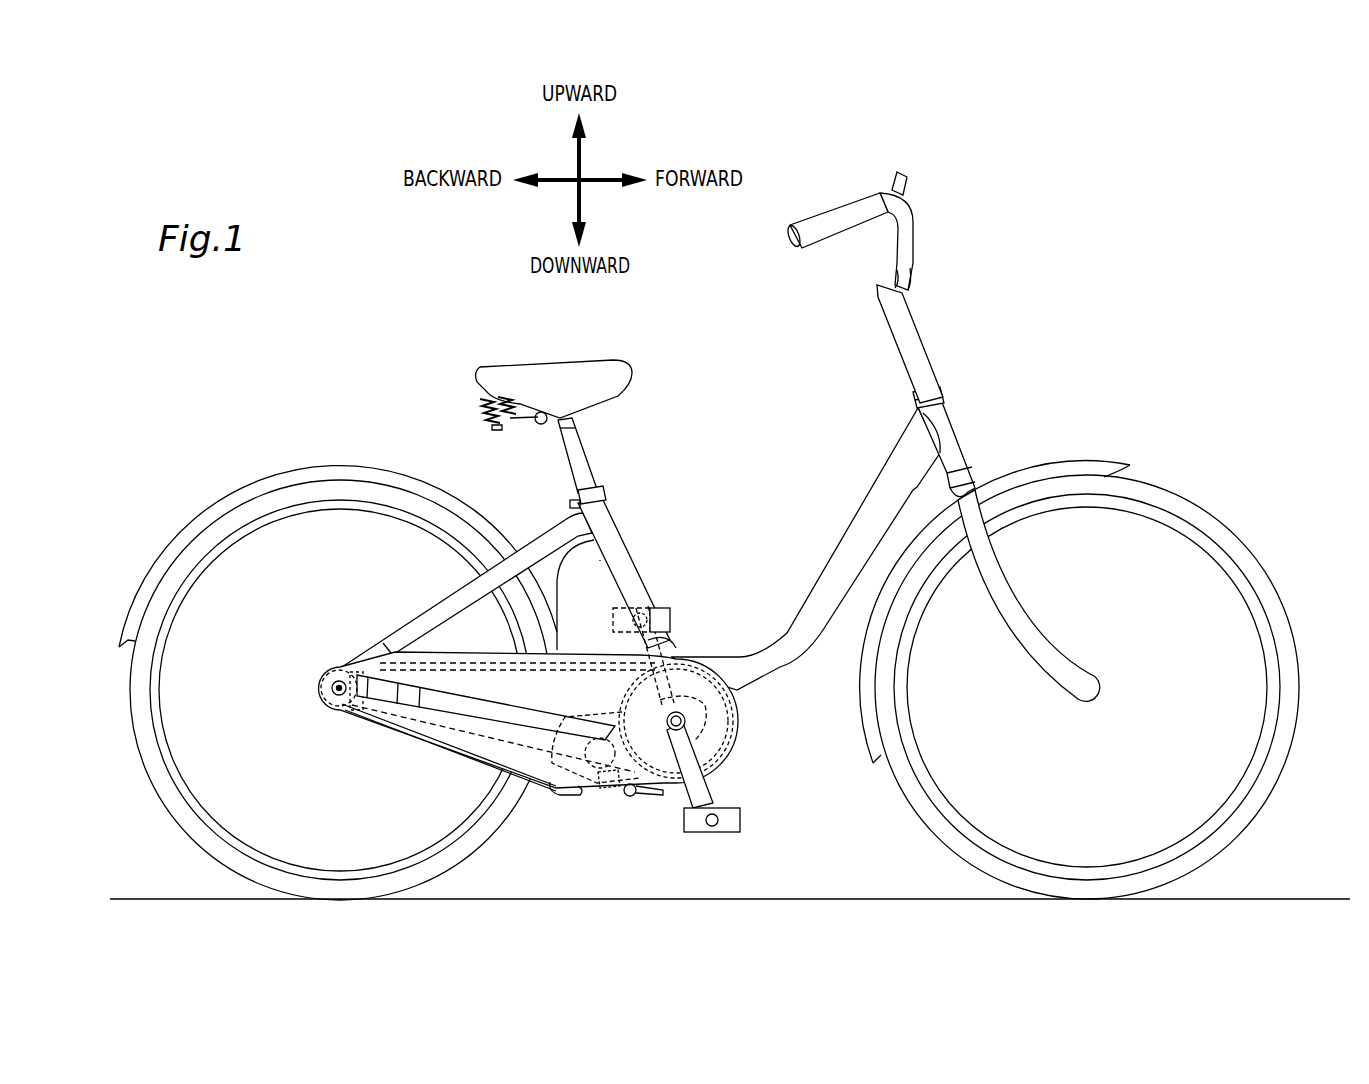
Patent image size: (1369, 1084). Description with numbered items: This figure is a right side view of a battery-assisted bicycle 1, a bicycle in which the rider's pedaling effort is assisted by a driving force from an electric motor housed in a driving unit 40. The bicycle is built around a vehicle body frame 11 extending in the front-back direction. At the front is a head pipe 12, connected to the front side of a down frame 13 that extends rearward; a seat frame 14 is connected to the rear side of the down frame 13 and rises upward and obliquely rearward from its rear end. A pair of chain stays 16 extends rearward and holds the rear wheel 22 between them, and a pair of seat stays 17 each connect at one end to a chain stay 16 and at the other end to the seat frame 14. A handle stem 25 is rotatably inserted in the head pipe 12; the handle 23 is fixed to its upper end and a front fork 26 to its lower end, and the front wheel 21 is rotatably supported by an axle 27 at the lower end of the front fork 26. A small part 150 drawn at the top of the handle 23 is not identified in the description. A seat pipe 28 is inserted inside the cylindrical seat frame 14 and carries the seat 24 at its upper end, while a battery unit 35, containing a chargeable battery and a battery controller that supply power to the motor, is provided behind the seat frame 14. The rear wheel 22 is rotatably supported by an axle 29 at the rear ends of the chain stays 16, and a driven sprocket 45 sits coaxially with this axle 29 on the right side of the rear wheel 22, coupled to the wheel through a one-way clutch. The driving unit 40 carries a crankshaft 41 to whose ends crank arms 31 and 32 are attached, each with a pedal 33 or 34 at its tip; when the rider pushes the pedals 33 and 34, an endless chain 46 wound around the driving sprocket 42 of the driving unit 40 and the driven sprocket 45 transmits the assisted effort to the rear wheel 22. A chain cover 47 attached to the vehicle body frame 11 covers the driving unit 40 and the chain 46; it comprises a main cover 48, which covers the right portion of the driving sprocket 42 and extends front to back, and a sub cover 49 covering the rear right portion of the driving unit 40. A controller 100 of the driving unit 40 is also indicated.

The battery-assisted bicycle 1 is at (1037, 228).
The vehicle body frame 11 is at (818, 524).
The head pipe 12 is at (945, 427).
The down frame 13 is at (878, 500).
The seat frame 14 is at (612, 543).
The chain stays 16 is at (463, 700).
The seat stays 17 is at (409, 621).
The front wheel 21 is at (1205, 519).
The rear wheel 22 is at (133, 706).
The handle 23 is at (907, 218).
The seat 24 is at (565, 375).
The handle stem 25 is at (905, 343).
The front fork 26 is at (997, 583).
The axle 27 is at (1095, 682).
The seat pipe 28 is at (582, 467).
The axle 29 is at (327, 707).
The crank arm 31 is at (703, 787).
The crank arm 32 is at (670, 643).
The pedal 33 is at (730, 817).
The pedal 34 is at (660, 615).
The battery unit 35 is at (593, 577).
The driving unit 40 is at (572, 730).
The crankshaft 41 is at (685, 721).
The driving sprocket 42 is at (610, 717).
The driven sprocket 45 is at (350, 713).
The chain 46 is at (400, 729).
The chain cover 47 is at (626, 822).
The main cover 48 is at (653, 782).
The sub cover 49 is at (613, 783).
The controller 100 is at (733, 702).
The stem top 150 is at (906, 170).